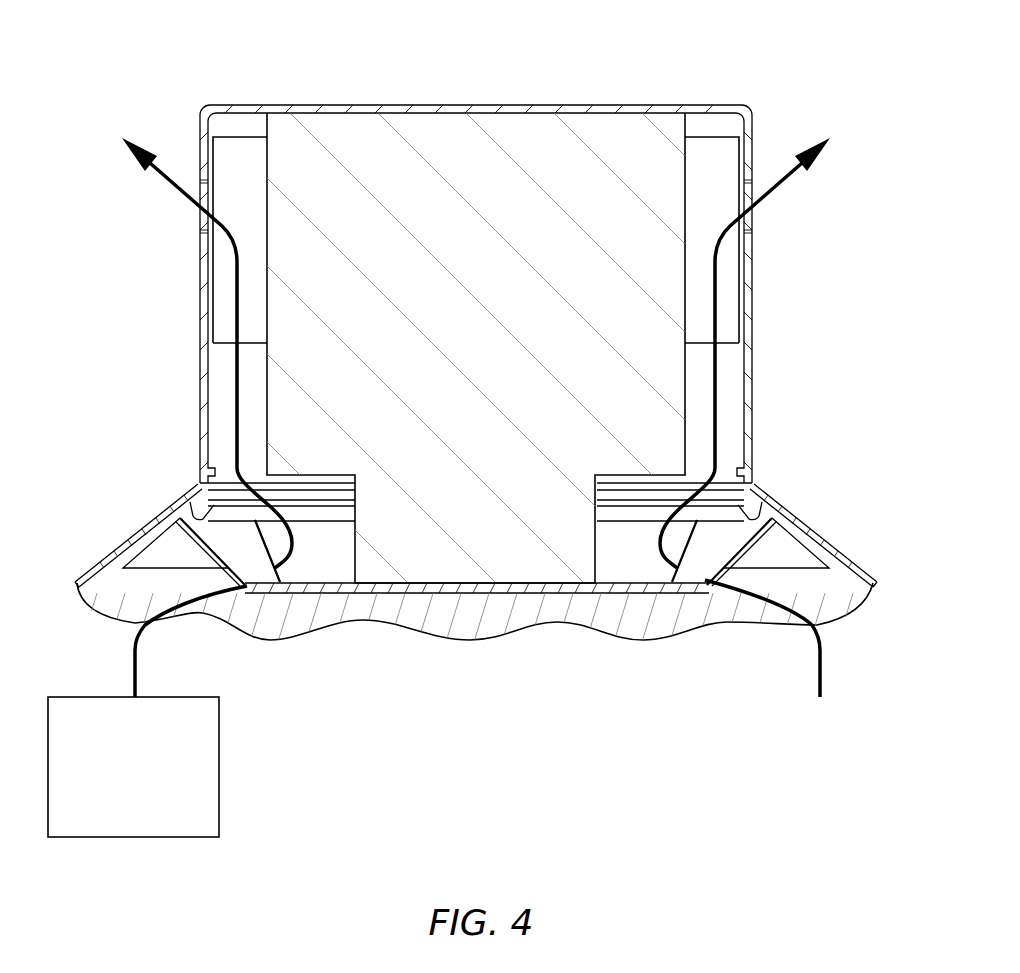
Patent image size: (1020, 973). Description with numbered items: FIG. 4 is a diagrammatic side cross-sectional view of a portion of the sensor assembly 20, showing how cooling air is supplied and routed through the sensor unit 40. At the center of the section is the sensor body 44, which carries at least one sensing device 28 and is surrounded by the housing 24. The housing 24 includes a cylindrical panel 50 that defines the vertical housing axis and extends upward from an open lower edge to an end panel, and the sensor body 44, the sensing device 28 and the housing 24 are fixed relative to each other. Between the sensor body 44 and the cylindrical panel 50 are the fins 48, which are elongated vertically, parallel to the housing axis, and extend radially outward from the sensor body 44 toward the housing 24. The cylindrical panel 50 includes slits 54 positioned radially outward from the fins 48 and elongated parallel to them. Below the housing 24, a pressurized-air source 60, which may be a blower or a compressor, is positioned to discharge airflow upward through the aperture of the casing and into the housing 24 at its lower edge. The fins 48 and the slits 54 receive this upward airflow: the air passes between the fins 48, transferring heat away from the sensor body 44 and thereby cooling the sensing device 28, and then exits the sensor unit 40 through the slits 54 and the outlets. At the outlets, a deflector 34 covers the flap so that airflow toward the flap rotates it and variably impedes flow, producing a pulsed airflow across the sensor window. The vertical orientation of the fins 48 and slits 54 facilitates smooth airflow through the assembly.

The sensor assembly 20 is at (510, 323).
The housing 24 is at (748, 107).
The sensing device 28 is at (688, 431).
The deflector 34 is at (110, 555).
The sensor unit 40 is at (858, 167).
The sensor body 44 is at (602, 140).
The fins 48 is at (230, 152).
The cylindrical panel 50 is at (200, 390).
The slits 54 is at (393, 105).
The pressurized-air source 60 is at (195, 837).